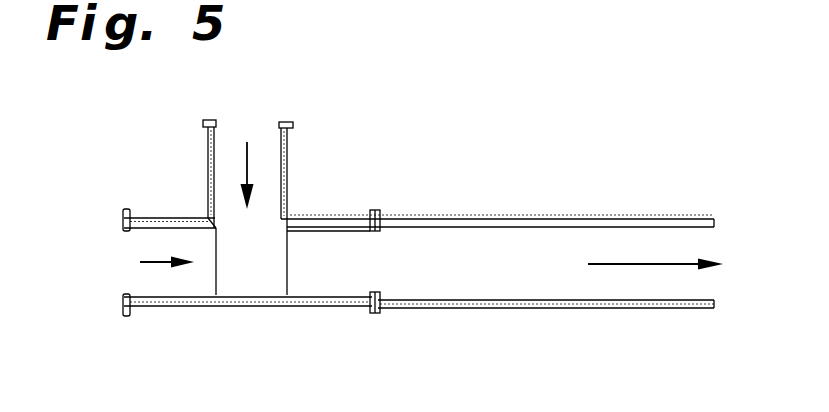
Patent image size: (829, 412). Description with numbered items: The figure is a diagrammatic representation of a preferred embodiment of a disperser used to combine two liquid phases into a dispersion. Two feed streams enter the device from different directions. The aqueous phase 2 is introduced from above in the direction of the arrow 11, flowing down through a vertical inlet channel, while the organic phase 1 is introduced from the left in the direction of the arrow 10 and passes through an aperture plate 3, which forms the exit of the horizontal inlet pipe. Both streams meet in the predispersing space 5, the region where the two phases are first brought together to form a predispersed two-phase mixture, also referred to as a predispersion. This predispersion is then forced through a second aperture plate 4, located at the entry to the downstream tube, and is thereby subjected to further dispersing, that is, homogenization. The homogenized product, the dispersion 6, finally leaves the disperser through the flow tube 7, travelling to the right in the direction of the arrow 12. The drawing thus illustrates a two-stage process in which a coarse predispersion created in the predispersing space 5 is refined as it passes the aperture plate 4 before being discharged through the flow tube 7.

The organic phase 1 is at (237, 262).
The aqueous phase 2 is at (248, 149).
The aperture plate 3 is at (205, 265).
The aperture plate 4 is at (304, 243).
The predispersing space 5 is at (230, 256).
The dispersion 6 is at (738, 263).
The flow tube 7 is at (536, 215).
The arrow 10 is at (167, 277).
The arrow 11 is at (256, 175).
The arrow 12 is at (655, 280).